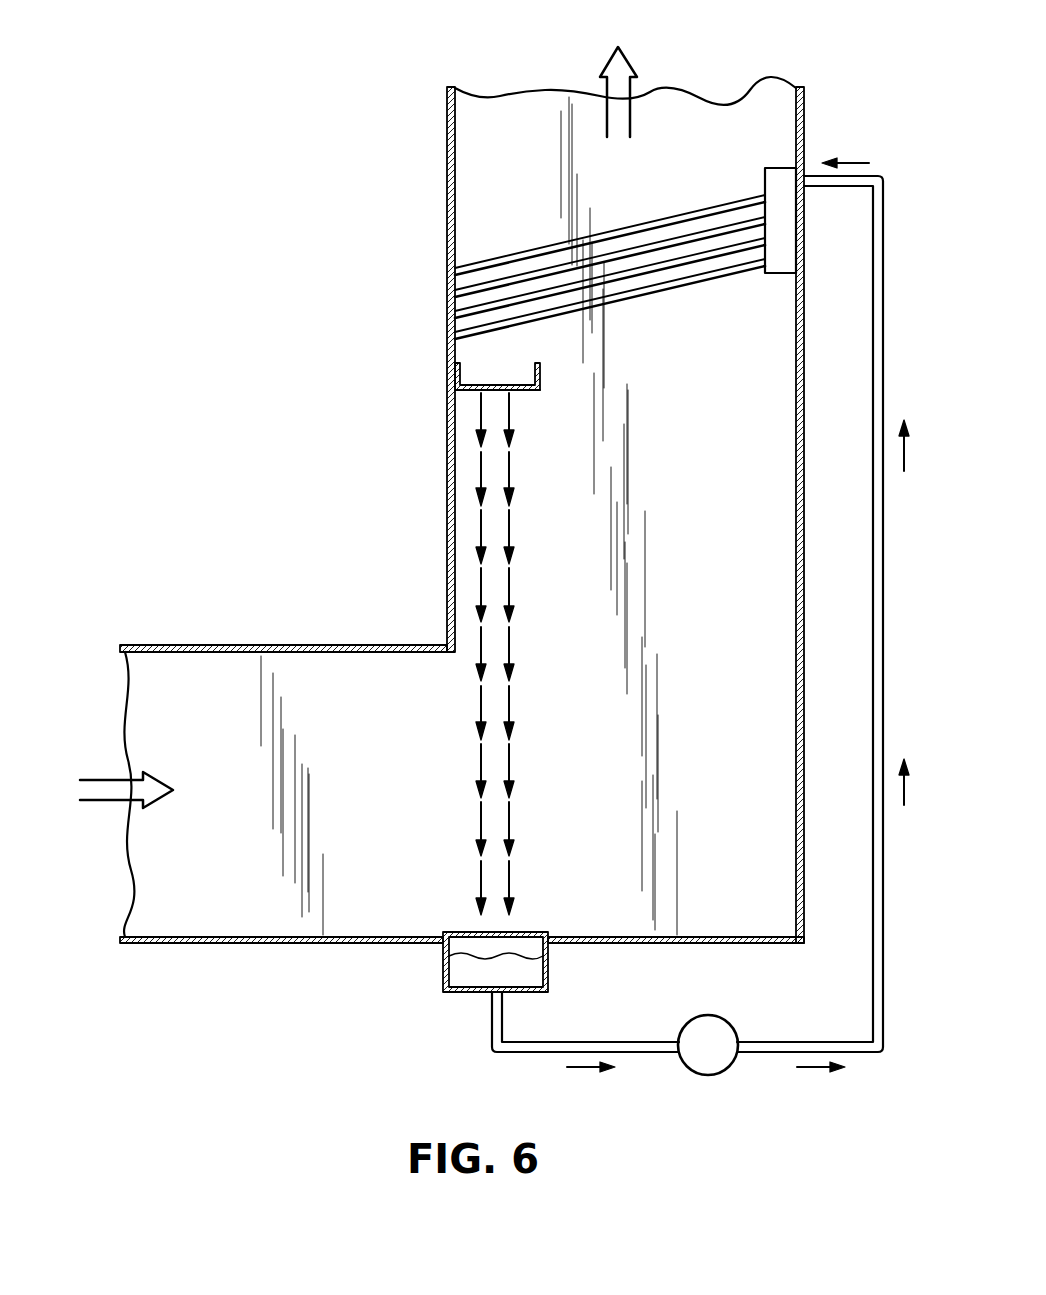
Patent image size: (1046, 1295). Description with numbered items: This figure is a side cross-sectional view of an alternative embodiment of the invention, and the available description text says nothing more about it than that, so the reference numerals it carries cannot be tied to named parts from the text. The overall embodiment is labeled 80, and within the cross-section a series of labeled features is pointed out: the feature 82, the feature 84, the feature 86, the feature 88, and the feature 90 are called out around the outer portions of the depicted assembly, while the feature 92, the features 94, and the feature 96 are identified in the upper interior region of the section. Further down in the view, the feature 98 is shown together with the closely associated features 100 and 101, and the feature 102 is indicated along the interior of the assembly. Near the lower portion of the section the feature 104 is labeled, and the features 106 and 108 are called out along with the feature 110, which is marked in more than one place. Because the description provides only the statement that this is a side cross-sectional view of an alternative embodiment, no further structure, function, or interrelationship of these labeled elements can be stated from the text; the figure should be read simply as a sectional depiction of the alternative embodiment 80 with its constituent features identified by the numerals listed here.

The gas treatment apparatus 80 is at (240, 161).
The housing / tower 82 is at (356, 638).
The gas inlet 84 is at (147, 830).
The gas outlet 86 is at (663, 117).
The inlet duct wall 88 is at (187, 645).
The housing side wall 90 is at (805, 118).
The tube bundle / liquid distributor 92 is at (657, 208).
The tubes 94 is at (545, 273).
The header / manifold 96 is at (773, 167).
The collection tray 98 is at (455, 342).
The tray outlet 100 is at (527, 392).
The tray outlet 101 is at (480, 392).
The liquid flow 102 is at (509, 652).
The sump / reservoir 104 is at (527, 940).
The pump 106 is at (713, 1023).
The return line / conduit 108 is at (884, 555).
The flow direction 110 is at (810, 1072).